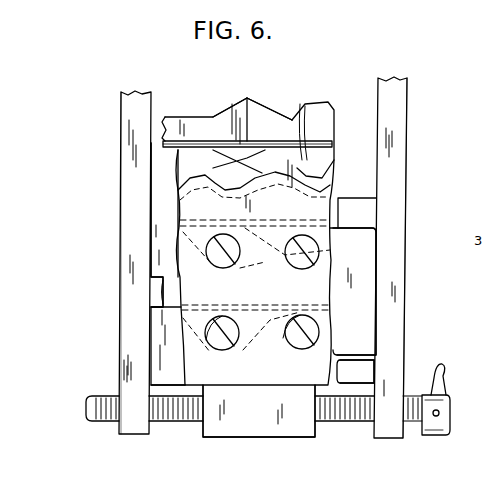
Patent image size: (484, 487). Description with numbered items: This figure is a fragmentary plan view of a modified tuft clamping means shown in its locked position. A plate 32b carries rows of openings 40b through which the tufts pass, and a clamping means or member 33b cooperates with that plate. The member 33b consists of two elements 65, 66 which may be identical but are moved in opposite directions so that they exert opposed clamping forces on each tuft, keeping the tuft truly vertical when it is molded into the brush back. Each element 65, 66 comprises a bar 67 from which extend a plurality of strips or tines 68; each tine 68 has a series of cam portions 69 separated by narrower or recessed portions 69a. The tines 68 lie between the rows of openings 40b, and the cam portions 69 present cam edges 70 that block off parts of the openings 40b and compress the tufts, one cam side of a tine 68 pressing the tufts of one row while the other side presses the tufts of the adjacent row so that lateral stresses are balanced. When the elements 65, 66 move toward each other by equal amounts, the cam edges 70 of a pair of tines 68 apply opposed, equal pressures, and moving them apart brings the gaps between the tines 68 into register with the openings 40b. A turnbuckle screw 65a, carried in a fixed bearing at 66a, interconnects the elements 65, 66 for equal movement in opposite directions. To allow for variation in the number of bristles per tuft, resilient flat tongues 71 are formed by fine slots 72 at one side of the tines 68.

The element of member 33b 65 is at (115, 295).
The turnbuckle screw 65a is at (86, 408).
The element of member 33b 66 is at (404, 300).
The fixed bearing 66a is at (216, 430).
The bar 67 is at (133, 230).
The strips or tines 68 is at (178, 305).
The cam portion 69 is at (257, 122).
The narrower or recessed portions 69a is at (180, 252).
The cam edges 70 is at (225, 100).
The resilient elements or flat tongues 71 is at (240, 170).
The fine slots 72 is at (247, 100).
The plate 32b is at (330, 186).
The means or member 33b is at (115, 370).
The openings 40b is at (270, 347).